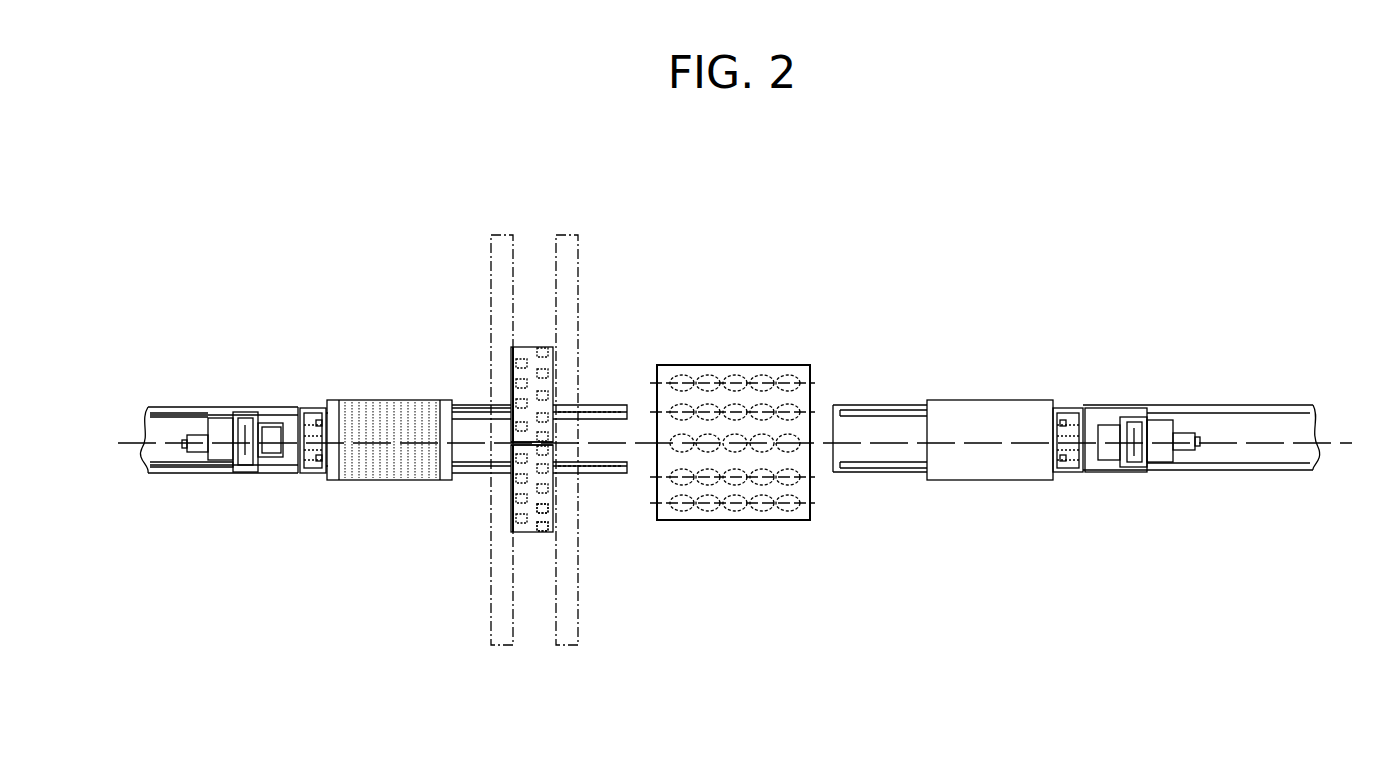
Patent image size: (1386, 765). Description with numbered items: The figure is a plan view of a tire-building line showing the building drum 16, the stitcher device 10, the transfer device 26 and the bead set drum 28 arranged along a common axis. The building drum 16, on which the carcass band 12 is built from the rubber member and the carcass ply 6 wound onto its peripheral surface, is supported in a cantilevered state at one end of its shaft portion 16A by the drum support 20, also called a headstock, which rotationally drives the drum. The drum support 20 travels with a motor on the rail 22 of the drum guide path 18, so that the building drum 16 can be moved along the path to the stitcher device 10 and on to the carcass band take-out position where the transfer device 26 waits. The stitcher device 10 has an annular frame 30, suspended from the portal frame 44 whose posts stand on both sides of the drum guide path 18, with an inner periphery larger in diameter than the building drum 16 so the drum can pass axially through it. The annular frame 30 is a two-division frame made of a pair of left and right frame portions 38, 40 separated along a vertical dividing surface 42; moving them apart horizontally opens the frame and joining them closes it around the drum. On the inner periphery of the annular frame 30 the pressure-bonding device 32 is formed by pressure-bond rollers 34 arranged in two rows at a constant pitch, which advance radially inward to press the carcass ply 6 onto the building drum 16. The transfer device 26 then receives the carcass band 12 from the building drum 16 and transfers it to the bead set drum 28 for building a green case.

The stitcher device 10 is at (600, 253).
The drum guide path 18 is at (185, 407).
The rail 22 is at (172, 467).
The drum support 20 is at (278, 467).
The shaft portion 16A is at (317, 467).
The building drum 16 is at (389, 449).
The carcass ply 6 is at (389, 396).
The carcass band 12 is at (383, 400).
The frame portion 40 is at (510, 348).
The frame portion 38 is at (511, 531).
The annular frame 30 is at (560, 453).
The dividing surface 42 is at (527, 443).
The portal frame 44 is at (567, 233).
The pressure-bond roller 34 is at (615, 574).
The pressure-bonding device 32 is at (555, 510).
The transfer device 26 is at (757, 520).
The bead set drum 28 is at (975, 480).